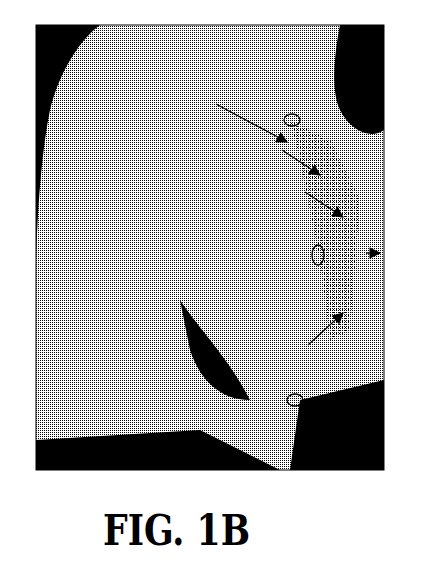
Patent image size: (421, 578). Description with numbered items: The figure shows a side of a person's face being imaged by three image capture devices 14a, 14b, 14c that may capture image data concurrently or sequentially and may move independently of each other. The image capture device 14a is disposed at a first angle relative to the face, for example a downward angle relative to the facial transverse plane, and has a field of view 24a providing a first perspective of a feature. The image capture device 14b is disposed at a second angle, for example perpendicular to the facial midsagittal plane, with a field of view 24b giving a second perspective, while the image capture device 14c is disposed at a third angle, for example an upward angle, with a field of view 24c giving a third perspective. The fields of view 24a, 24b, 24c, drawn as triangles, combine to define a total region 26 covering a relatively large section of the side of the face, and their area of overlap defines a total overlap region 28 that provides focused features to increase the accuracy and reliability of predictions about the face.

The image capture device 14a is at (280, 108).
The image capture device 14b is at (305, 255).
The image capture device 14c is at (294, 389).
The field of view 24a is at (285, 160).
The field of view 24b is at (308, 199).
The field of view 24c is at (311, 336).
The total region 26 is at (241, 116).
The total overlap region 28 is at (362, 261).